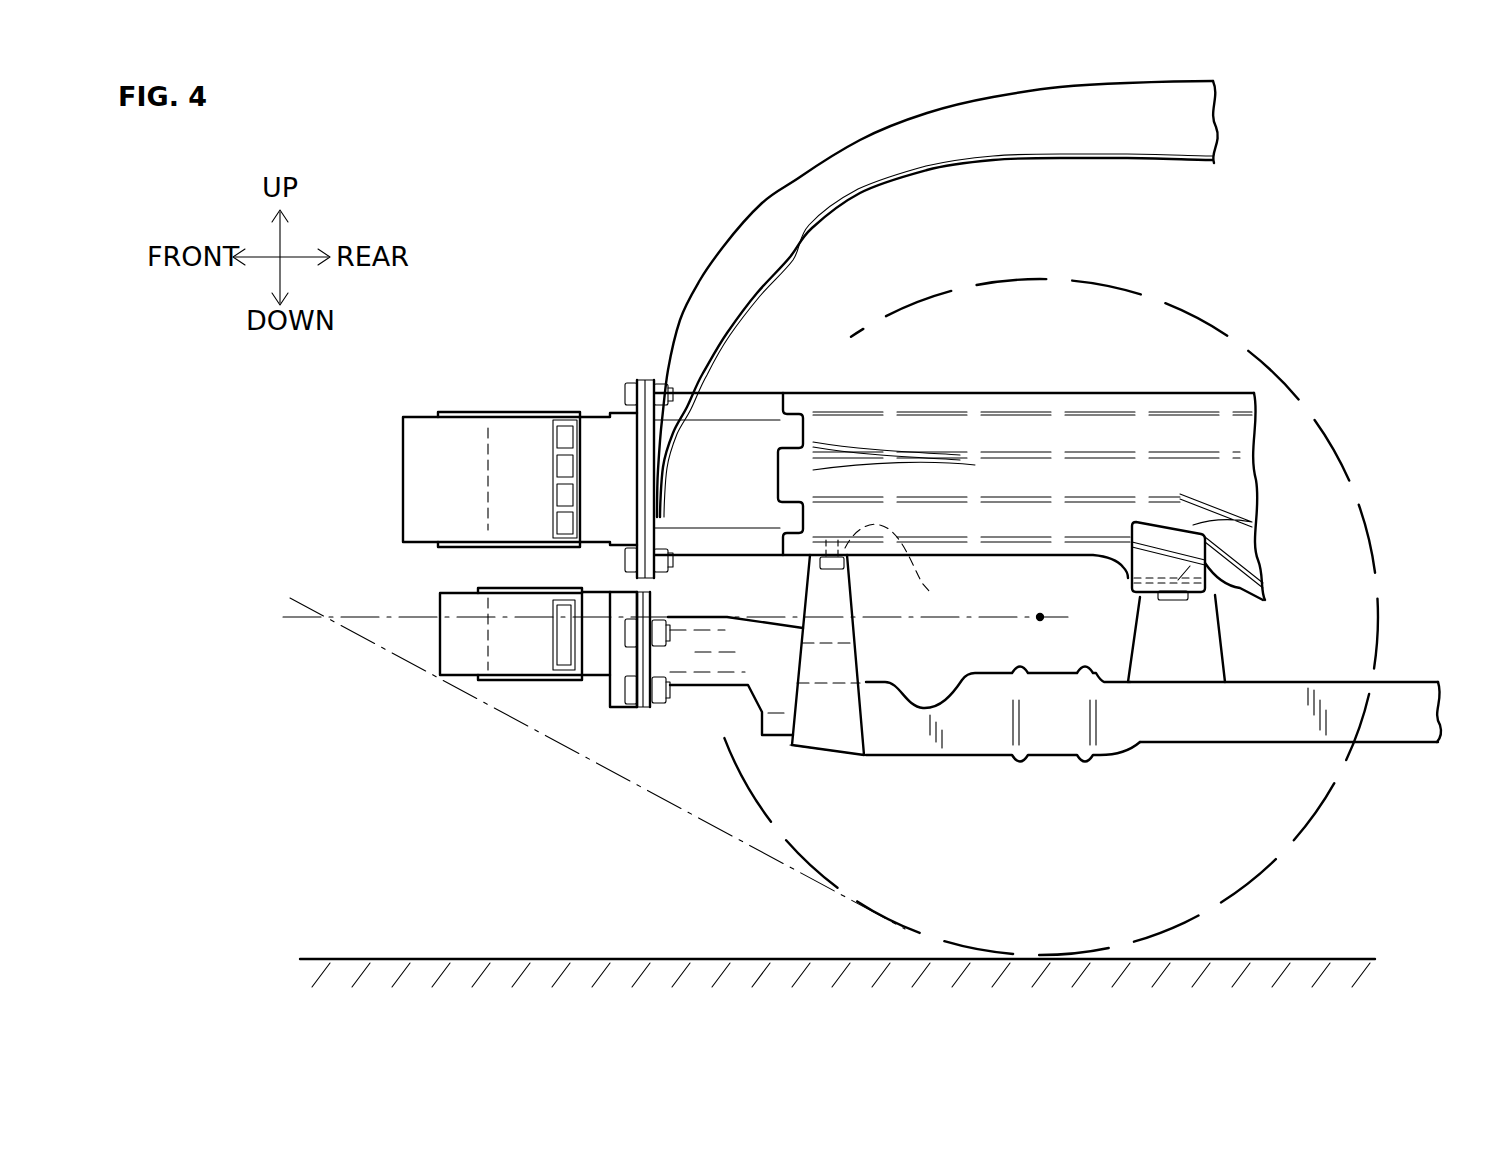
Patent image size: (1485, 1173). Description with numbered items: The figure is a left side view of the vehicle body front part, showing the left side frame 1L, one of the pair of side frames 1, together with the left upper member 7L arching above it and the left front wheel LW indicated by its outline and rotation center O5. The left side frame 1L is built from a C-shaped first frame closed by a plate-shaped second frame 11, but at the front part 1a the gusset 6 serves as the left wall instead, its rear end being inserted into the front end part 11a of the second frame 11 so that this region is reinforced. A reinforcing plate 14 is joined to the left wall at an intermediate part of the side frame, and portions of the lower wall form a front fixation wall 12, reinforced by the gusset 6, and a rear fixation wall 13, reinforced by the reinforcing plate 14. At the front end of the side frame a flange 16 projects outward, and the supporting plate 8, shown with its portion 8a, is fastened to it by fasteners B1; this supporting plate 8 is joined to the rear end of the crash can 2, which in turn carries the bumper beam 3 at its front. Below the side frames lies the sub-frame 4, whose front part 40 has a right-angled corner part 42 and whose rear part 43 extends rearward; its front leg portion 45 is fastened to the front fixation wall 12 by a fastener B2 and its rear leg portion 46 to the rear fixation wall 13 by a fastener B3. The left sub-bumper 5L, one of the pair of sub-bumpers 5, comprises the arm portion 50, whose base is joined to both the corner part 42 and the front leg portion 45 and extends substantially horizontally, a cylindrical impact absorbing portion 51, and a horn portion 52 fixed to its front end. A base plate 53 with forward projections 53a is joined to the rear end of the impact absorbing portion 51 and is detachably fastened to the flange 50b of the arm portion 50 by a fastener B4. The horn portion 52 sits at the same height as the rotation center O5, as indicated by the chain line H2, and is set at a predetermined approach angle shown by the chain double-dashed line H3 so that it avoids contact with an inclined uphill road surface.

The left side frame 1L is at (993, 464).
The side frame 1 is at (993, 464).
The front part of the left side frame 1a is at (728, 462).
The crash can 2 is at (601, 445).
The bumper beam 3 is at (382, 466).
The sub-frame 4 is at (1138, 740).
The left sub-bumper 5L is at (457, 738).
The sub-bumper 5 is at (504, 705).
The gusset 6 is at (765, 451).
The left upper member 7L is at (800, 193).
The bracket portion 8a is at (577, 438).
The supporting plate 8 is at (605, 418).
The second frame 11 is at (1120, 432).
The front end part of the second frame 11a is at (818, 472).
The front fixation wall 12 is at (910, 567).
The rear fixation wall 13 is at (1222, 593).
The reinforcing plate 14 is at (1185, 533).
The flange 16 is at (680, 380).
The front part of the sub-frame 40 is at (900, 748).
The corner part 42 is at (818, 727).
The rear part of the sub-frame 43 is at (1228, 740).
The front leg portion 45 is at (843, 650).
The rear leg portion 46 is at (1185, 650).
The arm portion 50 is at (728, 655).
The flange 50b is at (655, 668).
The impact absorbing portion 51 is at (605, 680).
The horn portion 52 is at (453, 652).
The projection 53a is at (556, 756).
The base plate 53 is at (610, 690).
The fastener B1 is at (628, 383).
The fastener B2 is at (832, 572).
The fastener B3 is at (1180, 600).
The fastener B4 is at (628, 628).
The chain line H2 is at (410, 617).
The chain double-dashed line H3 is at (360, 645).
The left front wheel LW is at (1318, 363).
The rotation center O5 is at (1044, 617).